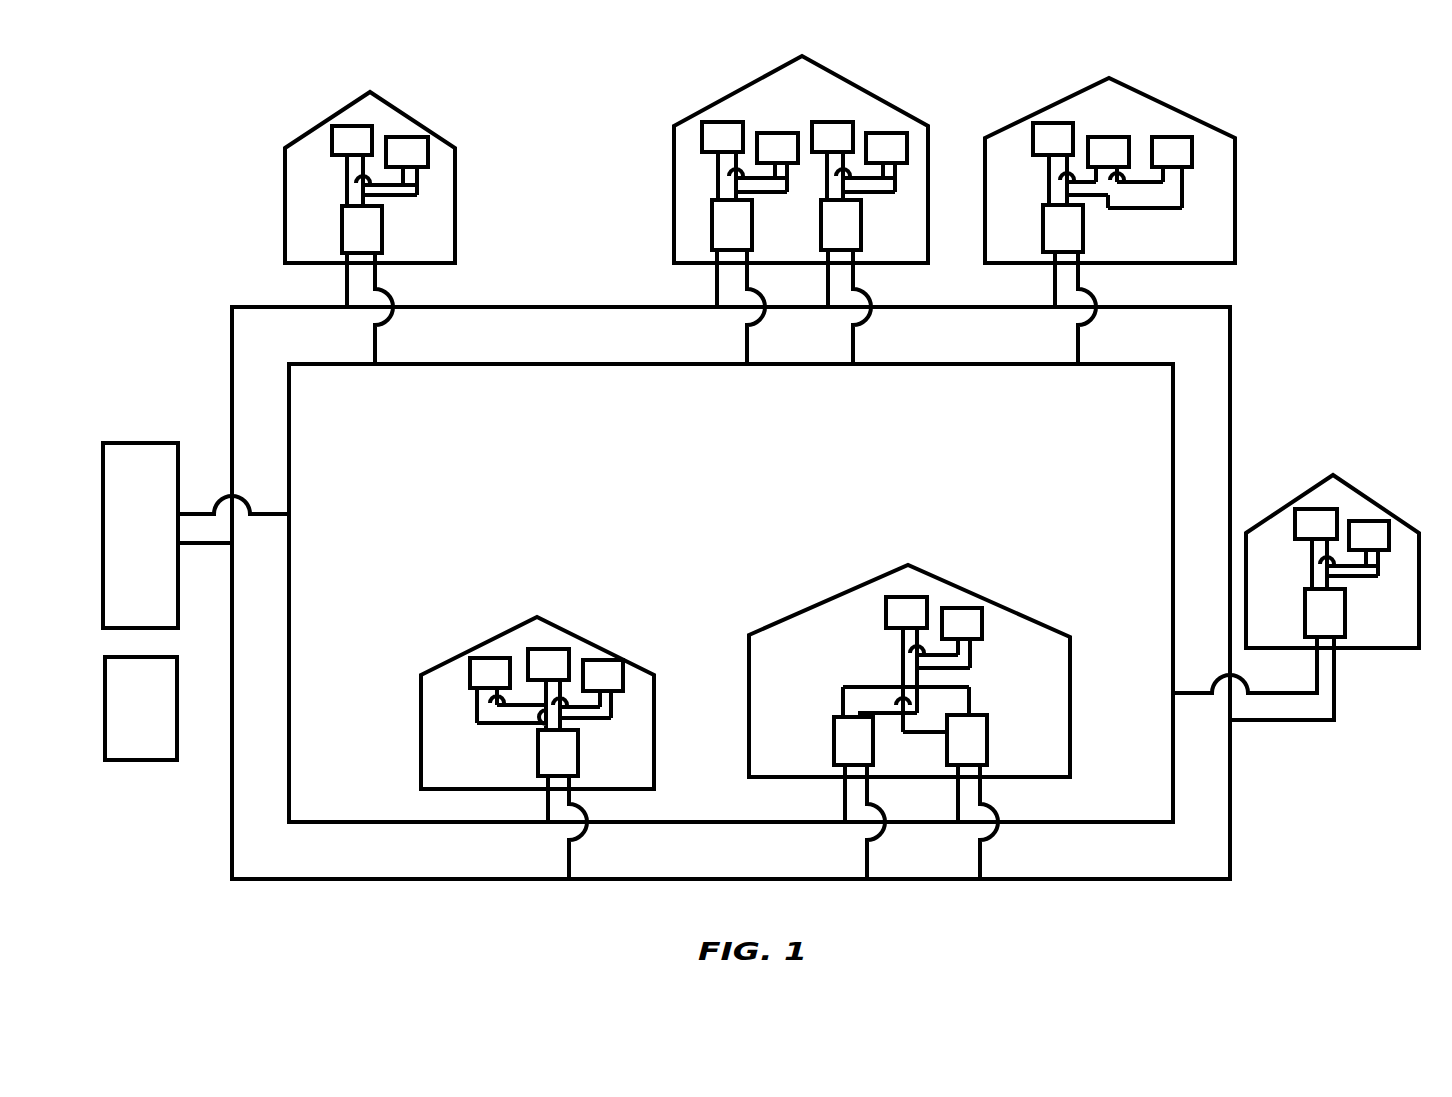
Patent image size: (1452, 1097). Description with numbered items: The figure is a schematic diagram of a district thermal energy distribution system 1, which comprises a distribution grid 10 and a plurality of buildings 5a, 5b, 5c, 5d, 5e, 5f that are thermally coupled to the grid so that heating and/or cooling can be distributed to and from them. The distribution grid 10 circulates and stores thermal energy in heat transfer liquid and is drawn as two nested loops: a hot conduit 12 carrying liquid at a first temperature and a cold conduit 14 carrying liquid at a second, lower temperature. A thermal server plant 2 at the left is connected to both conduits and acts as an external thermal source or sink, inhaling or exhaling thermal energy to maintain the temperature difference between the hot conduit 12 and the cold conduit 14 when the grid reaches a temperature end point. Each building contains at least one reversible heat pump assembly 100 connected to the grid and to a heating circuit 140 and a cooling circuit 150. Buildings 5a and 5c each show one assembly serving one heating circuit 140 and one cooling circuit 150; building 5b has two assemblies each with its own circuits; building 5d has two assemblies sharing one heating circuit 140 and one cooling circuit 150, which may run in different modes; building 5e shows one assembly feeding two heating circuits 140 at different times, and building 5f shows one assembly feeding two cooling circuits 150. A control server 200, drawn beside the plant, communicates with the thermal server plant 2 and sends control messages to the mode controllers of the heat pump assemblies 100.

The district thermal energy distribution system 1 is at (225, 152).
The thermal server plant 2 is at (143, 455).
The control server 200 is at (128, 762).
The distribution grid 10 is at (318, 650).
The hot conduit 12 is at (248, 305).
The cold conduit 14 is at (290, 552).
The building 5a is at (300, 148).
The building 5b is at (680, 172).
The building 5c is at (1358, 640).
The building 5d is at (760, 672).
The building 5e is at (432, 731).
The building 5f is at (1220, 236).
The reversible heat pump assembly 100 is at (373, 215).
The heating circuit 140 is at (350, 132).
The cooling circuit 150 is at (410, 142).